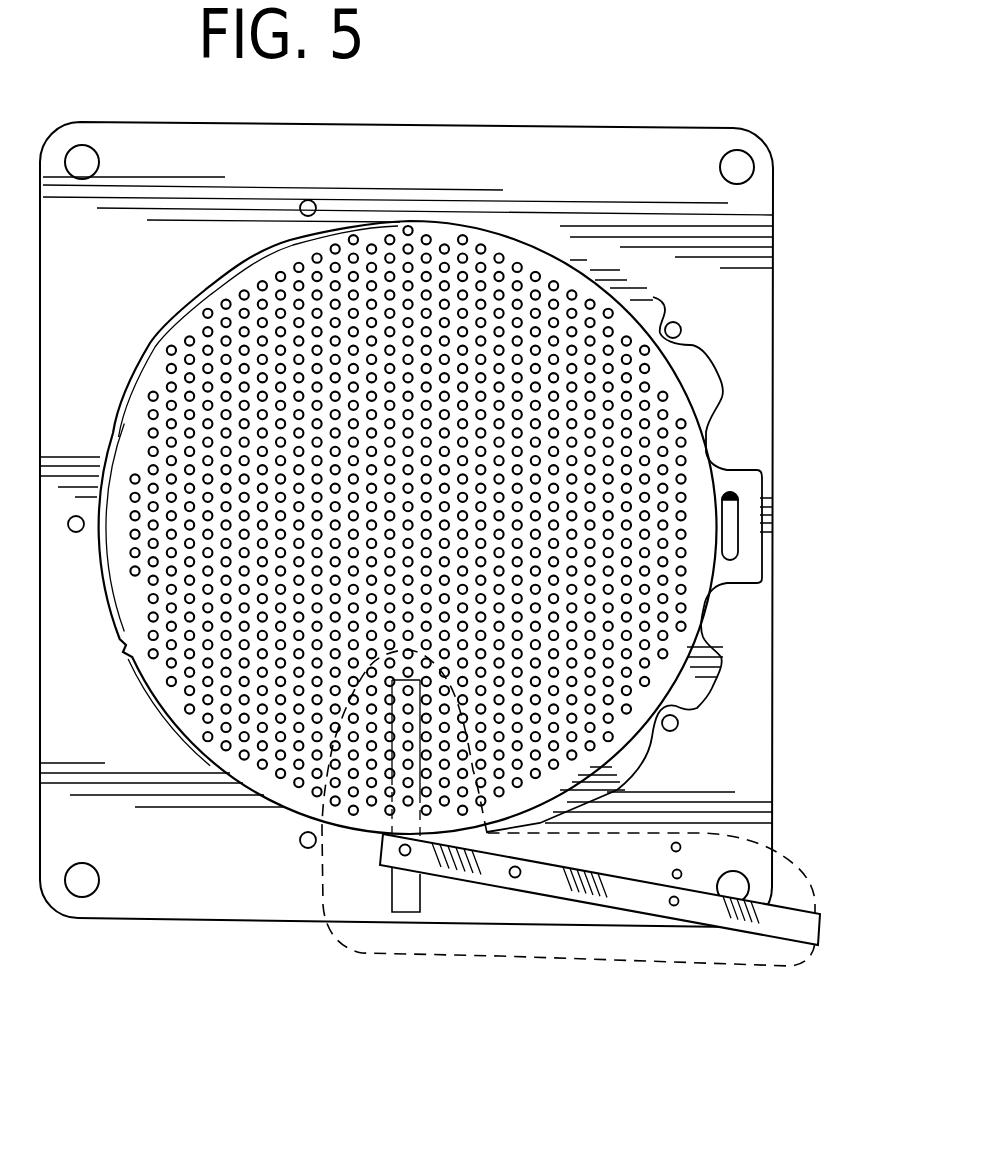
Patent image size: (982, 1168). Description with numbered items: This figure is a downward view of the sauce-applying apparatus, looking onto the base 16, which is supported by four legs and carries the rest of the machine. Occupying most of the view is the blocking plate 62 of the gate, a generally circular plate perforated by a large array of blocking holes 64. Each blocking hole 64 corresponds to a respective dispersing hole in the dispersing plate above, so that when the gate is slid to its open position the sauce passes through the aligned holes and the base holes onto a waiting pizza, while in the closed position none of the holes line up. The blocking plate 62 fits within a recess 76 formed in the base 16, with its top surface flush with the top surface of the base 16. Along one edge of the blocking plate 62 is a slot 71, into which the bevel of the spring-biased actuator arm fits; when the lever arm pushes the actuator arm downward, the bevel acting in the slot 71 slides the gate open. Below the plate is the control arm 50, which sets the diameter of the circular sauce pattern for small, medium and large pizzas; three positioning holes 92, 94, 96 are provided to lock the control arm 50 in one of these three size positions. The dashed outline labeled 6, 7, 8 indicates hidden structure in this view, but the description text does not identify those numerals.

The base 16 is at (157, 148).
The blocking plate 62 is at (537, 265).
The blocking holes 64 is at (467, 290).
The recess 76 is at (707, 377).
The slot 71 is at (727, 523).
The positioning hole 92 is at (680, 845).
The positioning hole 94 is at (682, 873).
The positioning hole 96 is at (674, 906).
The control arm 50 is at (555, 880).
The hidden assembly outline 6 is at (546, 818).
The hidden assembly outline 7 is at (546, 818).
The hidden assembly outline 8 is at (357, 947).